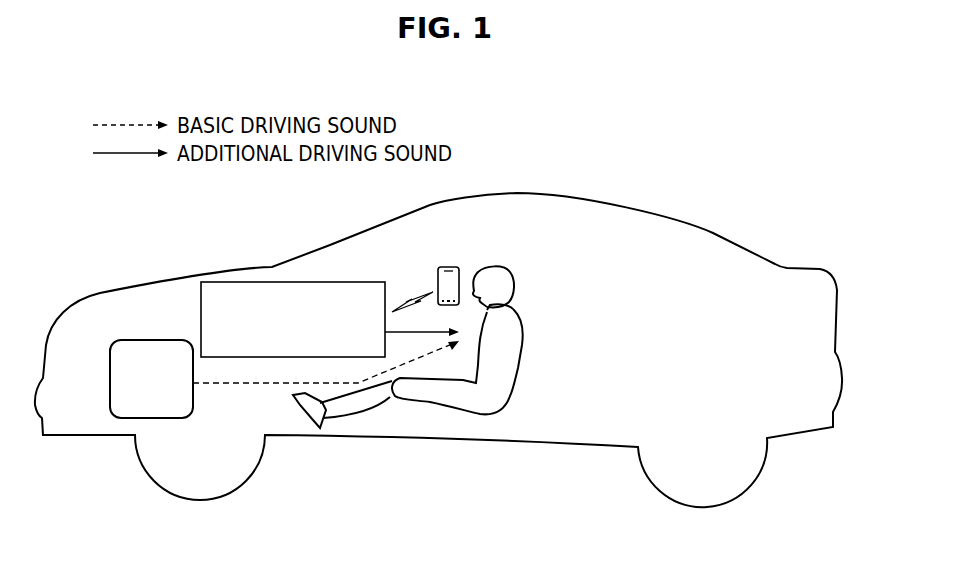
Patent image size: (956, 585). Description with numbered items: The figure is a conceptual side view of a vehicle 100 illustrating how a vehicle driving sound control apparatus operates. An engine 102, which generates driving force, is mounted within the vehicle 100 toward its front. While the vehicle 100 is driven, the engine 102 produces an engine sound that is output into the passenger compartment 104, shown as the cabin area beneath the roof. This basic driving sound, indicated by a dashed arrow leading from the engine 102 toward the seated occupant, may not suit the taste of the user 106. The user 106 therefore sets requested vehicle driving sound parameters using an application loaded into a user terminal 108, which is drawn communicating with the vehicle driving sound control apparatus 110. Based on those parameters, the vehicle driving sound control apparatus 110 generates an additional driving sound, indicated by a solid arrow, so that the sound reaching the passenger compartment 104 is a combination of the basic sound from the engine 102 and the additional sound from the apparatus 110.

The vehicle 100 is at (715, 233).
The engine 102 is at (147, 340).
The passenger compartment 104 is at (578, 272).
The user 106 is at (492, 266).
The user terminal 108 is at (447, 266).
The vehicle driving sound control apparatus 110 is at (294, 282).